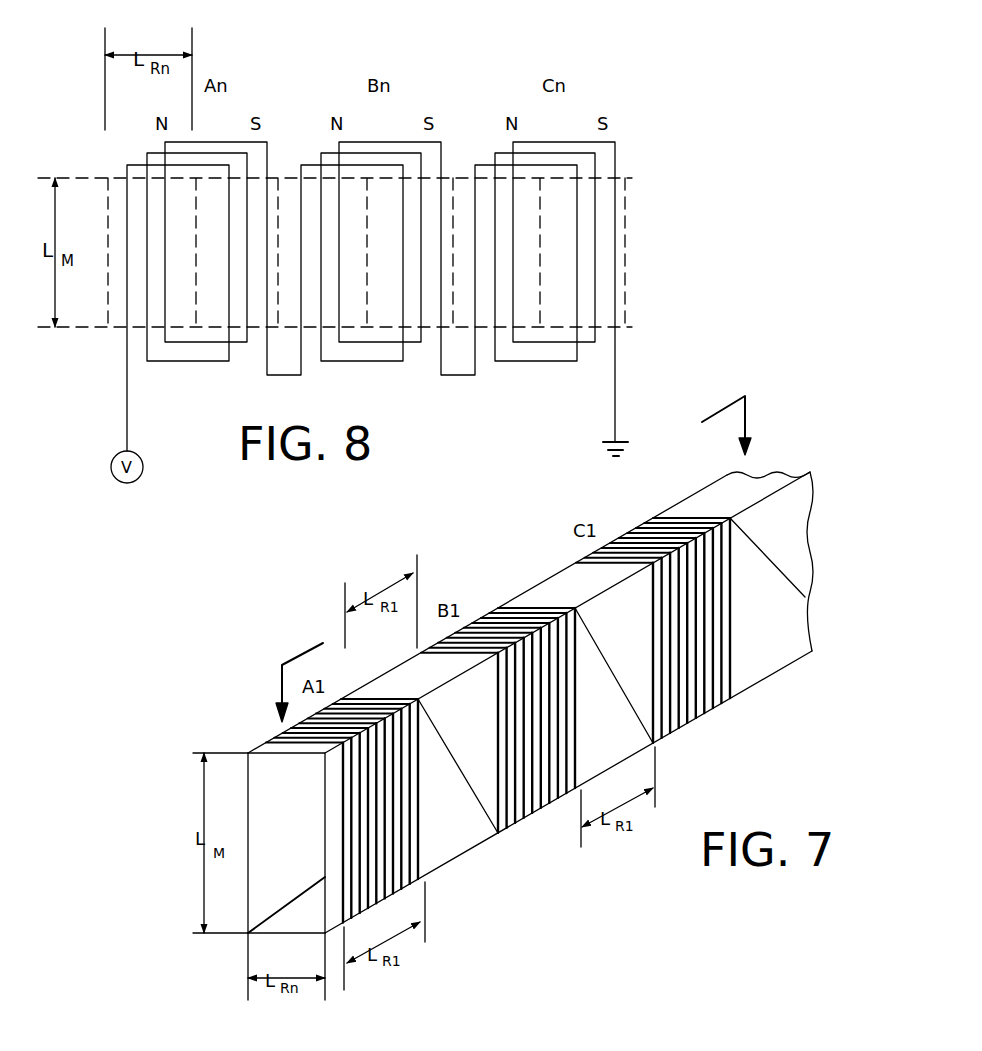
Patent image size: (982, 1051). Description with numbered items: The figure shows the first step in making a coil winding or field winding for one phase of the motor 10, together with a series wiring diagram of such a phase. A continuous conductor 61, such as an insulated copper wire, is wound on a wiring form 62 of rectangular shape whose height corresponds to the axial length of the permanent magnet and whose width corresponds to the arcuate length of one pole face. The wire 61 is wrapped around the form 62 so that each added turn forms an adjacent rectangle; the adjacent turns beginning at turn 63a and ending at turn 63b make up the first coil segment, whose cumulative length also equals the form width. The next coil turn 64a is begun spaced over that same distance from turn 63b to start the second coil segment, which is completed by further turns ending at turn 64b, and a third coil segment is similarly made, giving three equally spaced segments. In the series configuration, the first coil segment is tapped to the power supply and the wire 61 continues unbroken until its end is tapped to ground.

The motor 10 is at (519, 568).
The continuous conductor 61 is at (338, 850).
The wiring form 62 is at (775, 650).
The first turn of coil segment A1 63a is at (342, 875).
The last turn of coil segment A1 63b is at (427, 842).
The first turn of coil segment B1 64a is at (500, 800).
The last turn of coil segment B1 64b is at (532, 598).